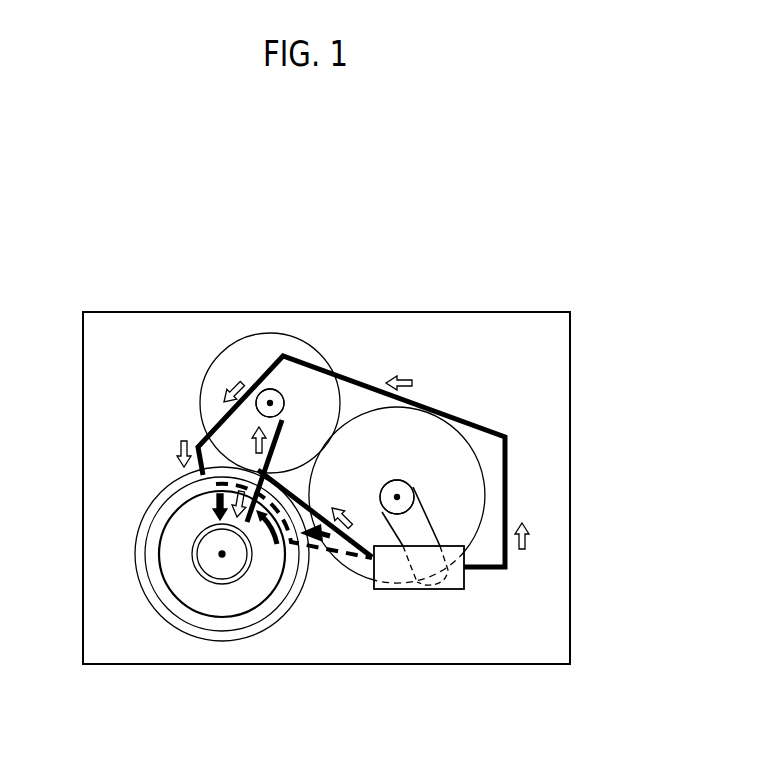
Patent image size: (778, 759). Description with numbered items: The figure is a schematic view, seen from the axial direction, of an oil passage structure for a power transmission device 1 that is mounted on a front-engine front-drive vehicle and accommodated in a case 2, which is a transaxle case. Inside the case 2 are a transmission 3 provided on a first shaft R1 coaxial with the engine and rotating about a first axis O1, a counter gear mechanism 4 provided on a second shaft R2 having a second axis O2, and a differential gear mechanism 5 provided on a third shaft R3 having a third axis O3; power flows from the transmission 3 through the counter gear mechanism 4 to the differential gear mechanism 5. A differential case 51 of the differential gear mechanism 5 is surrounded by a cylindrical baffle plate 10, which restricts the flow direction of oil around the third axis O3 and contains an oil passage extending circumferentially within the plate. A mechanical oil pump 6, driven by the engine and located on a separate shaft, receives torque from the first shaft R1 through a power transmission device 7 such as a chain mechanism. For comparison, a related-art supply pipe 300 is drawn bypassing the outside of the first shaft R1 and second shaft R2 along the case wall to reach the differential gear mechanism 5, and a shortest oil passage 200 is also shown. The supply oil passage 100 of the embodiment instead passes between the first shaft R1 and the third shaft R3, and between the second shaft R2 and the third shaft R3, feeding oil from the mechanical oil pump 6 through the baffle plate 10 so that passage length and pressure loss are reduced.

The power transmission device 1 is at (541, 294).
The case 2 is at (571, 352).
The transmission 3 is at (455, 430).
The counter gear mechanism 4 is at (222, 352).
The differential gear mechanism 5 is at (145, 508).
The baffle plate 10 is at (170, 612).
The differential case 51 is at (158, 552).
The mechanical oil pump 6 is at (453, 590).
The power transmission device 7 is at (387, 590).
The supply oil passage 100 is at (318, 556).
The shortest oil passage 200 is at (360, 558).
The supply pipe 300 is at (490, 432).
The first axis O1 is at (400, 497).
The second axis O2 is at (270, 402).
The third axis O3 is at (222, 555).
The first shaft R1 is at (403, 478).
The second shaft R2 is at (287, 397).
The third shaft R3 is at (198, 579).